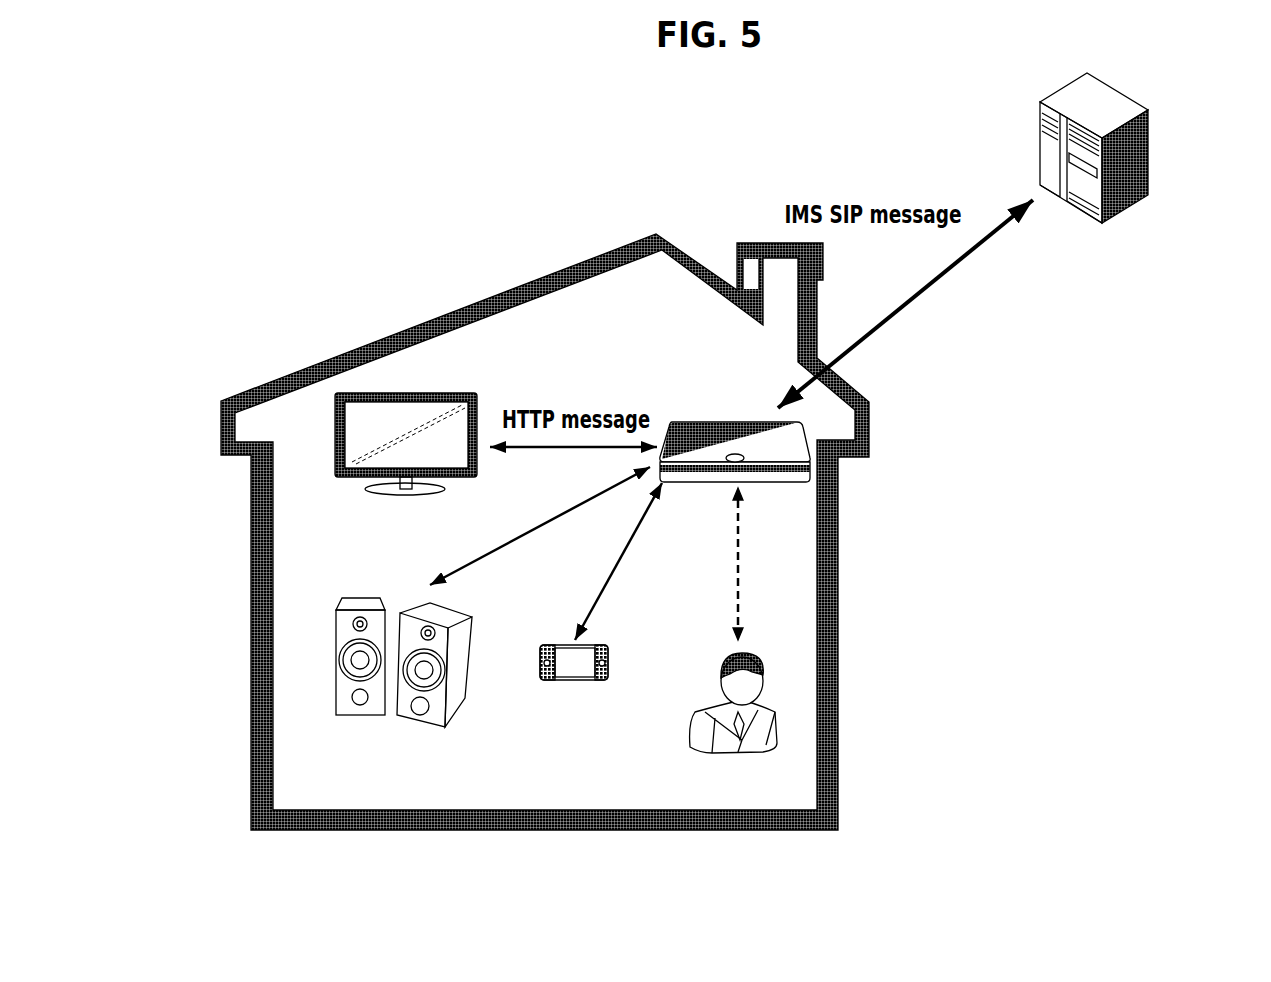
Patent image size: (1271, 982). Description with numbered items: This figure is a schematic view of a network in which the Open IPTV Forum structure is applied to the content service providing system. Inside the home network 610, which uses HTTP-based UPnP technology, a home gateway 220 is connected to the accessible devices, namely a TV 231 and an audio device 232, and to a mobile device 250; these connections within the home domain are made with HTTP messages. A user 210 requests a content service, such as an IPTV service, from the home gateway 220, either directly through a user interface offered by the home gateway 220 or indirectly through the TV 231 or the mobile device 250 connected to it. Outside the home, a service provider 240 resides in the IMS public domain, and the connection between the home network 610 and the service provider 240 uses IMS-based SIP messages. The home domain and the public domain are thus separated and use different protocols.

The user 210 is at (777, 718).
The home gateway 220 is at (768, 481).
The TV 231 is at (406, 393).
The audio device 232 is at (337, 633).
The service provider 240 is at (1150, 150).
The mobile device 250 is at (560, 645).
The home network 610 is at (705, 831).